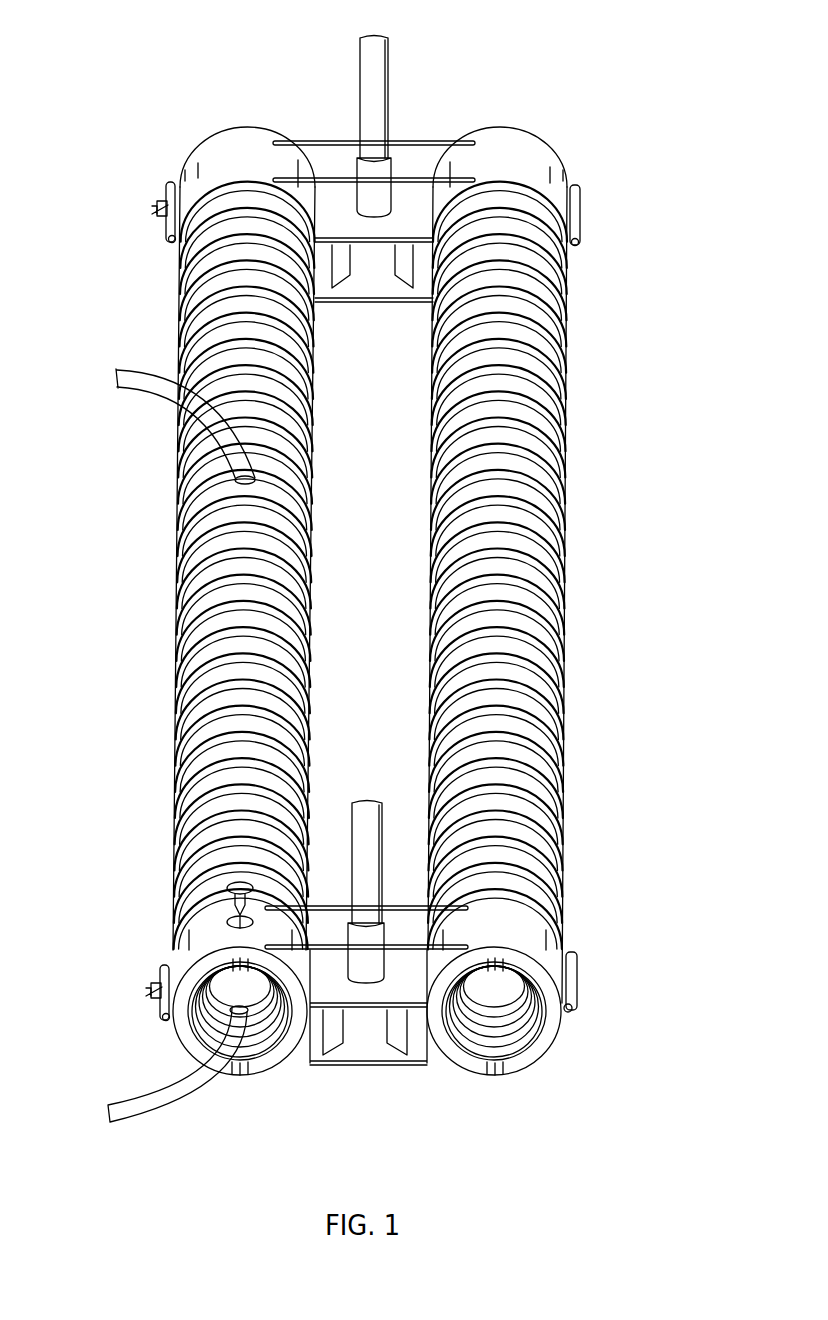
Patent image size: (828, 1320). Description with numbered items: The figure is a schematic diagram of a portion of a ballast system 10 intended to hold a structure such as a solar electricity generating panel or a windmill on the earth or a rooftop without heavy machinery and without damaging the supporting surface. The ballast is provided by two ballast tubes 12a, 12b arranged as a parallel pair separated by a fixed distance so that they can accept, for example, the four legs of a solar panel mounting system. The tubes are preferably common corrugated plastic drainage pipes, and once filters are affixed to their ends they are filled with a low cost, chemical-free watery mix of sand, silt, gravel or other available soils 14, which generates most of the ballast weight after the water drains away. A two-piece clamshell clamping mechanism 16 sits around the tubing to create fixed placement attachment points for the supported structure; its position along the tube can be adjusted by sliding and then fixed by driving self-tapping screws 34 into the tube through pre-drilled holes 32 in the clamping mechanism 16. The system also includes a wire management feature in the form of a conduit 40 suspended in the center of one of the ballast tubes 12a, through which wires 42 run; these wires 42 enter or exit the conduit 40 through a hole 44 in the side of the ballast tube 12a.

The ballast system 10 is at (180, 50).
The ballast tubing 12a is at (177, 575).
The ballast tubing 12b is at (565, 568).
The soils 14 is at (260, 1043).
The clamping mechanism 16 is at (180, 1048).
The pre-drilled holes 32 is at (227, 922).
The self-tapping screws 34 is at (228, 888).
The conduit 40 is at (230, 1013).
The wire 42 is at (132, 368).
The hole 44 is at (233, 478).